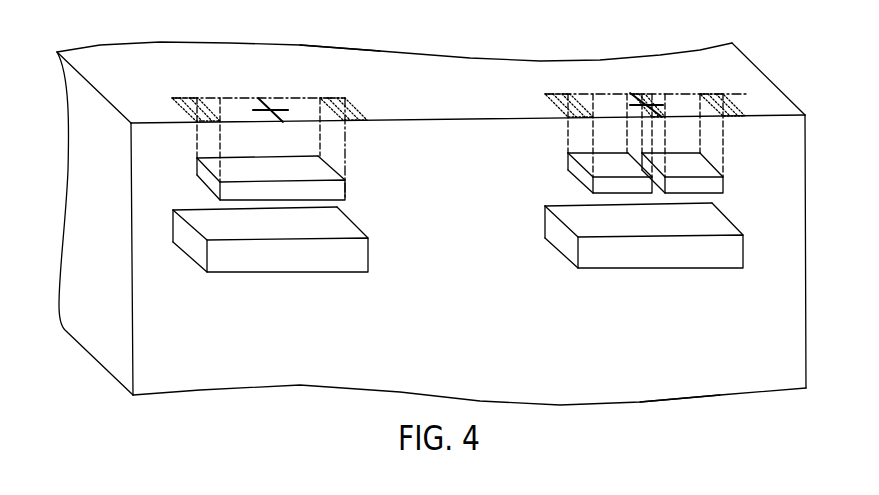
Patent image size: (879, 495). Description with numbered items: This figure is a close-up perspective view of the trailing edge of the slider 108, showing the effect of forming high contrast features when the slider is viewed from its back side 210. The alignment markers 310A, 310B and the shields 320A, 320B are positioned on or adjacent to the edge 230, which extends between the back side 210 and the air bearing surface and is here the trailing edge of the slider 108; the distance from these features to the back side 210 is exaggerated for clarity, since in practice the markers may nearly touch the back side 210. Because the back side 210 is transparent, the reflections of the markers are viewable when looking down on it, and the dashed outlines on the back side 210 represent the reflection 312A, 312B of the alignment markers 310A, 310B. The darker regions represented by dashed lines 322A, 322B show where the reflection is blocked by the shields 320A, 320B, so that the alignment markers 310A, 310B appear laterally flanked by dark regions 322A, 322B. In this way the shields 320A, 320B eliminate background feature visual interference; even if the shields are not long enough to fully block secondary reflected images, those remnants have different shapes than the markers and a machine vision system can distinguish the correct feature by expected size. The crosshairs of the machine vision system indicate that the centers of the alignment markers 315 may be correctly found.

The slider 108 is at (104, 330).
The back side 210 is at (112, 54).
The edge 230 is at (763, 387).
The alignment marker 310A is at (333, 192).
The reflection 312A is at (228, 106).
The centers of the alignment markers 315 is at (270, 106).
The shield 320A is at (358, 257).
The dark region 322A is at (187, 96).
The alignment marker 310B is at (585, 163).
The reflection 312B is at (600, 103).
The shield 320B is at (733, 253).
The dark region 322B is at (553, 89).